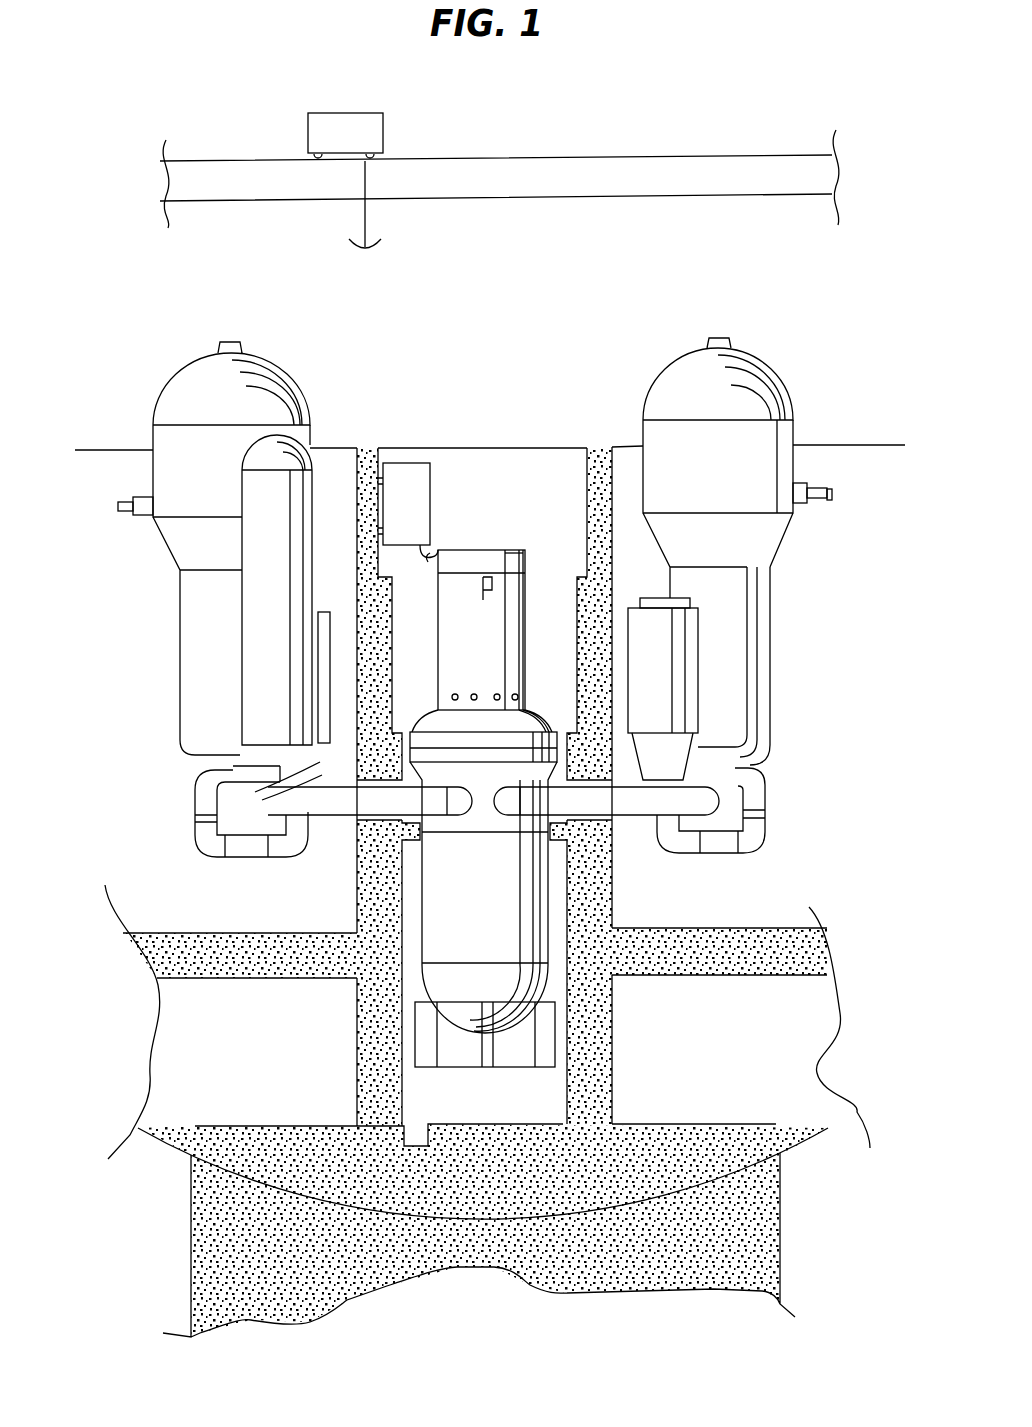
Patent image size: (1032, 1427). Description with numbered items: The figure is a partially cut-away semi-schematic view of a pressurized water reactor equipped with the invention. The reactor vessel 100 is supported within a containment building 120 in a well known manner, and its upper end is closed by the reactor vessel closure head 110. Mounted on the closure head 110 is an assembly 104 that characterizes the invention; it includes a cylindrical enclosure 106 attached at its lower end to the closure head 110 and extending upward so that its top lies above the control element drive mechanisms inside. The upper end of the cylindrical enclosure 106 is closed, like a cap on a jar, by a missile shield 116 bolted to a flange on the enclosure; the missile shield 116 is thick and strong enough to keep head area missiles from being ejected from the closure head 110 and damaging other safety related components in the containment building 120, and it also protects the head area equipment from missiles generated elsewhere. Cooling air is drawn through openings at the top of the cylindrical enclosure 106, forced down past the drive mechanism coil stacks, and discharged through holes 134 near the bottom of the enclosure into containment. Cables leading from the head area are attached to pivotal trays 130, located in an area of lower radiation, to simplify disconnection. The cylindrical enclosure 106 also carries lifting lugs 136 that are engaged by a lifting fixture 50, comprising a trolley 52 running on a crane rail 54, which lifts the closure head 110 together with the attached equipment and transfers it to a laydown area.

The lifting fixture 50 is at (373, 215).
The trolley 52 is at (347, 128).
The crane rail 54 is at (543, 167).
The reactor vessel 100 is at (447, 915).
The assembly 104 is at (493, 492).
The cylindrical enclosure 106 is at (490, 627).
The reactor vessel closure head 110 is at (443, 725).
The missile shield 116 is at (450, 563).
The containment building 120 is at (490, 837).
The pivotal trays 130 is at (407, 487).
The holes 134 is at (474, 694).
The lifting lugs 136 is at (510, 552).